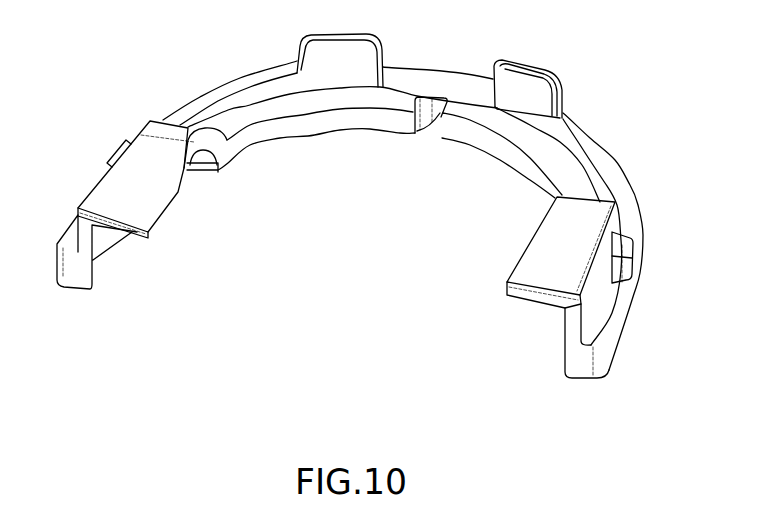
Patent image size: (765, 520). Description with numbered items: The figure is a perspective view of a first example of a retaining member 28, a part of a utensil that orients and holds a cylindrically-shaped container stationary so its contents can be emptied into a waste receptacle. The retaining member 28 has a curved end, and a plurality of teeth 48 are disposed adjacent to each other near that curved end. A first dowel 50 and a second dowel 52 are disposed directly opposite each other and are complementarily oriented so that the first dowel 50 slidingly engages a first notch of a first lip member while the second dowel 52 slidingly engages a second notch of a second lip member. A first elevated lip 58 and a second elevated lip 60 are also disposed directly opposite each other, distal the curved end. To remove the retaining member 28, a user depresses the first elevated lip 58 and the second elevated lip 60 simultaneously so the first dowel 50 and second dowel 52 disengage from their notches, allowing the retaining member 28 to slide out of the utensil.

The retaining member 28 is at (280, 377).
The teeth 48 is at (316, 56).
The first dowel 50 is at (628, 250).
The second dowel 52 is at (108, 153).
The first elevated lip 58 is at (543, 252).
The second elevated lip 60 is at (118, 194).